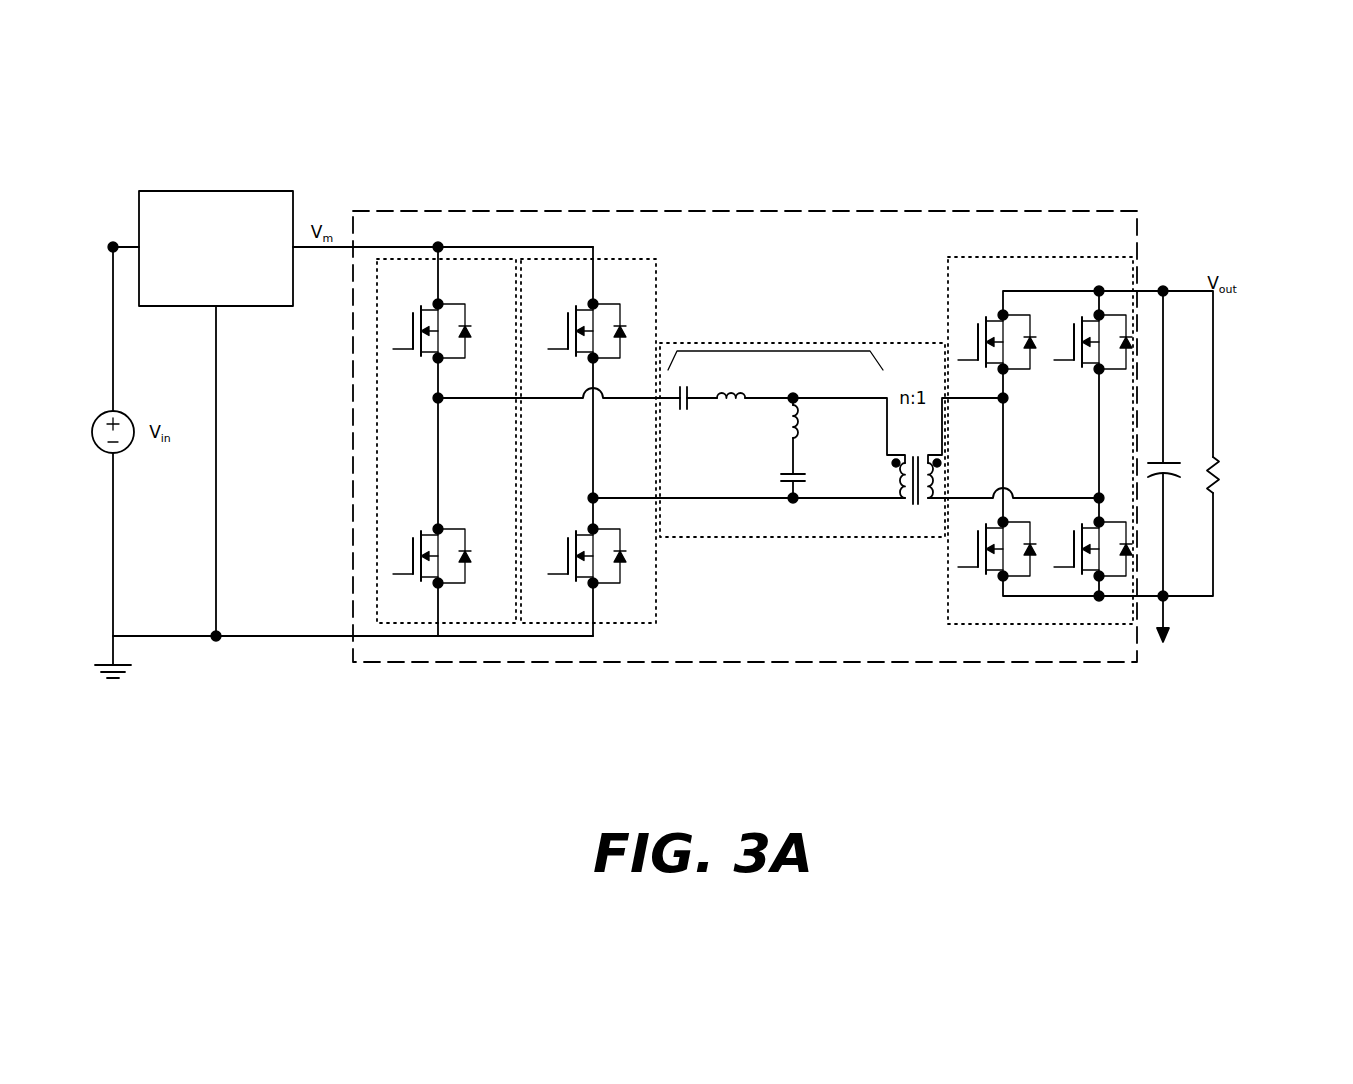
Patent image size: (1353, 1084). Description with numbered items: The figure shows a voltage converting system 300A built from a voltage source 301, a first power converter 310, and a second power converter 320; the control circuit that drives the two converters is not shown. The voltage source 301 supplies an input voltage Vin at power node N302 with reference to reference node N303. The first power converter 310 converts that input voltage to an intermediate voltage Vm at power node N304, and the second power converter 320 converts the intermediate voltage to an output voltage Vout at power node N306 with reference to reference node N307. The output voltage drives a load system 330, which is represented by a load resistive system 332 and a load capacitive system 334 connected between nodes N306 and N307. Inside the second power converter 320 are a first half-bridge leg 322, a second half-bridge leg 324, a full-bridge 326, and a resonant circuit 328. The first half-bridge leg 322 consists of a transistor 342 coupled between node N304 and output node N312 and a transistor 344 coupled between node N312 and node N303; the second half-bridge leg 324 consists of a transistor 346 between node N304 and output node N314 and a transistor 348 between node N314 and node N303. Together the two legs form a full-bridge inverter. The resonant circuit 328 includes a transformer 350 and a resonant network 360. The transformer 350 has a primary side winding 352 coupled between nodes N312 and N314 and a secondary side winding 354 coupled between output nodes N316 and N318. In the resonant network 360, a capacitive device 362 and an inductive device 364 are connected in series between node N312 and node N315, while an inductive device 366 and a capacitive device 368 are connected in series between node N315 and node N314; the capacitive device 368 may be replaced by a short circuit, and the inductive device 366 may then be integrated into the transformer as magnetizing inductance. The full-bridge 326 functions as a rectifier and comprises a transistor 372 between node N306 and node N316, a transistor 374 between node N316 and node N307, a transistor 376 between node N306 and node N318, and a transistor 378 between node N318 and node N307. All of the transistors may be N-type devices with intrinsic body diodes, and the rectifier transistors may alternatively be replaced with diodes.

The voltage converting system 300A is at (1080, 153).
The voltage source 301 is at (95, 412).
The first power converter 310 is at (208, 190).
The second power converter 320 is at (768, 210).
The first half-bridge leg 322 is at (397, 625).
The second half-bridge leg 324 is at (618, 625).
The full-bridge 326 is at (1016, 625).
The resonant circuit 328 is at (786, 540).
The load system 330 is at (1231, 408).
The load resistive system 332 is at (1227, 449).
The load capacitive system 334 is at (1177, 441).
The transistor 342 is at (392, 349).
The transistor 344 is at (400, 556).
The transistor 346 is at (549, 323).
The transistor 348 is at (549, 560).
The transformer 350 is at (902, 552).
The primary side winding 352 is at (900, 512).
The secondary side winding 354 is at (932, 512).
The resonant network 360 is at (776, 351).
The capacitive device 362 is at (683, 413).
The inductive device 364 is at (733, 410).
The inductive device 366 is at (810, 428).
The capacitive device 368 is at (808, 478).
The transistor 372 is at (974, 334).
The transistor 374 is at (987, 570).
The transistor 376 is at (1072, 336).
The transistor 378 is at (1070, 567).
The power node N302 is at (113, 245).
The reference node N303 is at (216, 638).
The power node N304 is at (438, 246).
The power node N306 is at (1163, 290).
The reference node N307 is at (1165, 600).
The output node N312 is at (445, 403).
The output node N314 is at (593, 497).
The node N315 is at (795, 398).
The output node N316 is at (1008, 400).
The output node N318 is at (1099, 498).